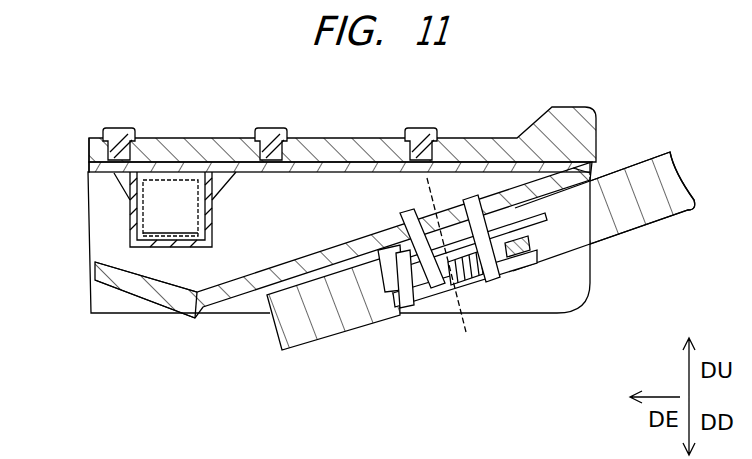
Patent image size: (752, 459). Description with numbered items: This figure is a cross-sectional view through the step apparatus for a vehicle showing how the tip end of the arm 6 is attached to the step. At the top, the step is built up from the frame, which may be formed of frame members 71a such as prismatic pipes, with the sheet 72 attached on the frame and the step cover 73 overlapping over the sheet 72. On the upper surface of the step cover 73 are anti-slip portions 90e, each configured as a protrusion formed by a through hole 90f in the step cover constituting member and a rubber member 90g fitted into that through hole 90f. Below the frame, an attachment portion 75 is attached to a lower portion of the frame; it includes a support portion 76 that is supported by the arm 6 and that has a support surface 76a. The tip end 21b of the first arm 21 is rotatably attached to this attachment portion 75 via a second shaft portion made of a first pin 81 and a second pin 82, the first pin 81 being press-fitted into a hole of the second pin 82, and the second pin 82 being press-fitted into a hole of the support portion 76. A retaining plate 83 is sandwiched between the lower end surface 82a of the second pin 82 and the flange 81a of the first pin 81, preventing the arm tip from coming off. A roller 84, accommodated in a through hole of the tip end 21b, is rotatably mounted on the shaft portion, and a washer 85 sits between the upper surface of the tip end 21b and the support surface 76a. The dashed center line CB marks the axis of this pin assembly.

The first arm 21 is at (660, 230).
The arm 6 is at (642, 198).
The tip end 21b is at (586, 256).
The step cover 73 is at (201, 138).
The sheet 72 is at (133, 173).
The frame member 71a is at (127, 215).
The attachment portion 75 is at (160, 298).
The support portion 76 is at (195, 320).
The support surface 76a is at (248, 305).
The first pin 81 is at (490, 288).
The flange 81a is at (455, 305).
The second pin 82 is at (405, 230).
The lower end surface 82a is at (400, 310).
The retaining plate 83 is at (530, 270).
The roller 84 is at (517, 232).
The washer 85 is at (545, 200).
The anti-slip portion 90e is at (428, 130).
The through hole 90f is at (407, 133).
The rubber member 90g is at (416, 130).
The center line CB is at (493, 333).